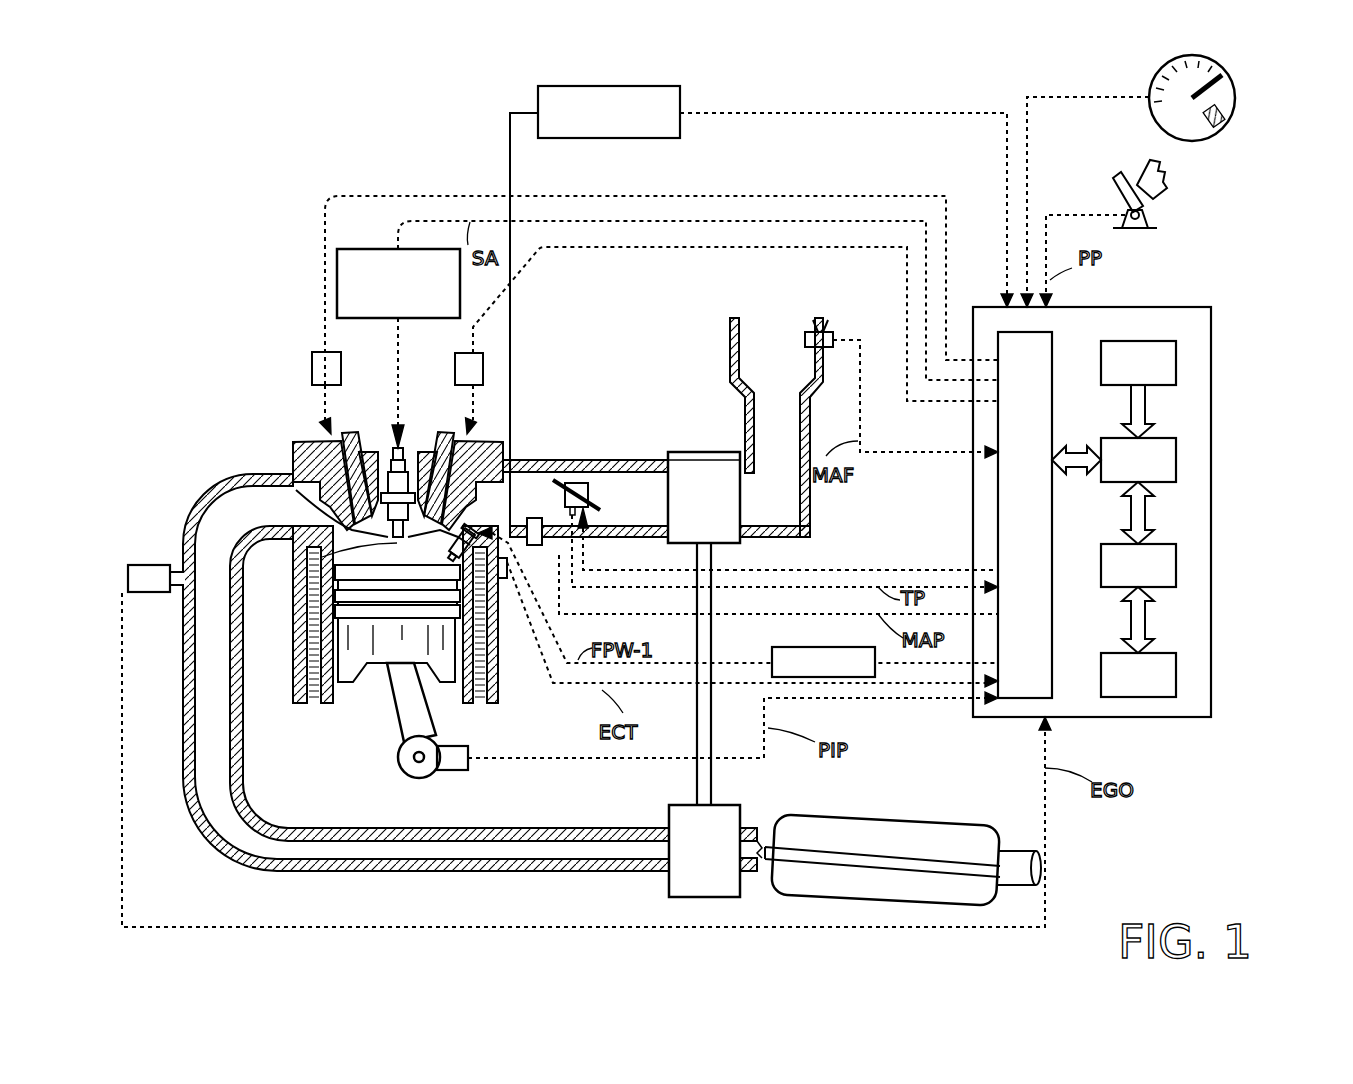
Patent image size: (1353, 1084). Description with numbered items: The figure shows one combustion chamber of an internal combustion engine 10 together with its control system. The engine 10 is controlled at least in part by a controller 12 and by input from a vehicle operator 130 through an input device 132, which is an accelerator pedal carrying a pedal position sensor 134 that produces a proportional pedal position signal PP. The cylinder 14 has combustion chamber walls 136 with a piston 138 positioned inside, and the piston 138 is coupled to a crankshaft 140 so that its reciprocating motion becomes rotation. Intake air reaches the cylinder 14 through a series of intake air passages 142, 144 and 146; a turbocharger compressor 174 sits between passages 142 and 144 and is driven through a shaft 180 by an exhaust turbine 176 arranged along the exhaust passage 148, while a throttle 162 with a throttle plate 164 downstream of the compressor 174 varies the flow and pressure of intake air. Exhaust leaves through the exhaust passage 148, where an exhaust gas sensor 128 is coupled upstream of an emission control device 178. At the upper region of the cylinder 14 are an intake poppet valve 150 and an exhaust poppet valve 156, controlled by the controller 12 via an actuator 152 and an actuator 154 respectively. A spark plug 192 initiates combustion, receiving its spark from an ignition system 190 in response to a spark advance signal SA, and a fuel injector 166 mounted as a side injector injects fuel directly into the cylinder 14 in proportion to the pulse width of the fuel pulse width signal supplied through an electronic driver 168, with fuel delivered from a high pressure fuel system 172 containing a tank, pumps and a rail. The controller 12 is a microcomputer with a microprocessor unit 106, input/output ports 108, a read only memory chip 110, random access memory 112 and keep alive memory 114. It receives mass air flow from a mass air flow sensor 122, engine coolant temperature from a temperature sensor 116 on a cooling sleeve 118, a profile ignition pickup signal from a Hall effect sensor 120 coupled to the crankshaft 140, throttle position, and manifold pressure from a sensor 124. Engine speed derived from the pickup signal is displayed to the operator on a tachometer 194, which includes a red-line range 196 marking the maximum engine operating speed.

The internal combustion engine 10 is at (230, 393).
The controller 12 is at (1200, 307).
The cylinder 14 is at (393, 545).
The microprocessor unit 106 is at (1176, 455).
The input/output ports 108 is at (1053, 340).
The read only memory chip 110 is at (1176, 358).
The random access memory 112 is at (1176, 565).
The keep alive memory 114 is at (1176, 672).
The temperature sensor 116 is at (503, 580).
The cooling sleeve 118 is at (482, 652).
The Hall effect sensor 120 is at (455, 773).
The mass air flow sensor 122 is at (830, 332).
The manifold pressure sensor 124 is at (536, 547).
The exhaust gas sensor 128 is at (128, 575).
The vehicle operator 130 is at (1164, 178).
The input device 132 is at (1113, 188).
The pedal position sensor 134 is at (1140, 215).
The combustion chamber walls 136 is at (338, 692).
The piston 138 is at (380, 652).
The crankshaft 140 is at (410, 778).
The intake air passage 142 is at (761, 368).
The intake air passage 144 is at (621, 508).
The intake air passage 146 is at (514, 508).
The exhaust passage 148 is at (246, 518).
The intake poppet valve 150 is at (427, 522).
The actuator 152 is at (455, 370).
The actuator 154 is at (312, 370).
The exhaust poppet valve 156 is at (347, 530).
The throttle 162 is at (577, 483).
The throttle plate 164 is at (553, 483).
The fuel injector 166 is at (470, 540).
The electronic driver 168 is at (773, 648).
The high pressure fuel system 172 is at (640, 86).
The compressor 174 is at (686, 452).
The exhaust turbine 176 is at (669, 888).
The emission control device 178 is at (955, 826).
The shaft 180 is at (705, 766).
The ignition system 190 is at (353, 249).
The spark plug 192 is at (395, 480).
The tachometer 194 is at (1234, 85).
The red-line range 196 is at (1232, 125).